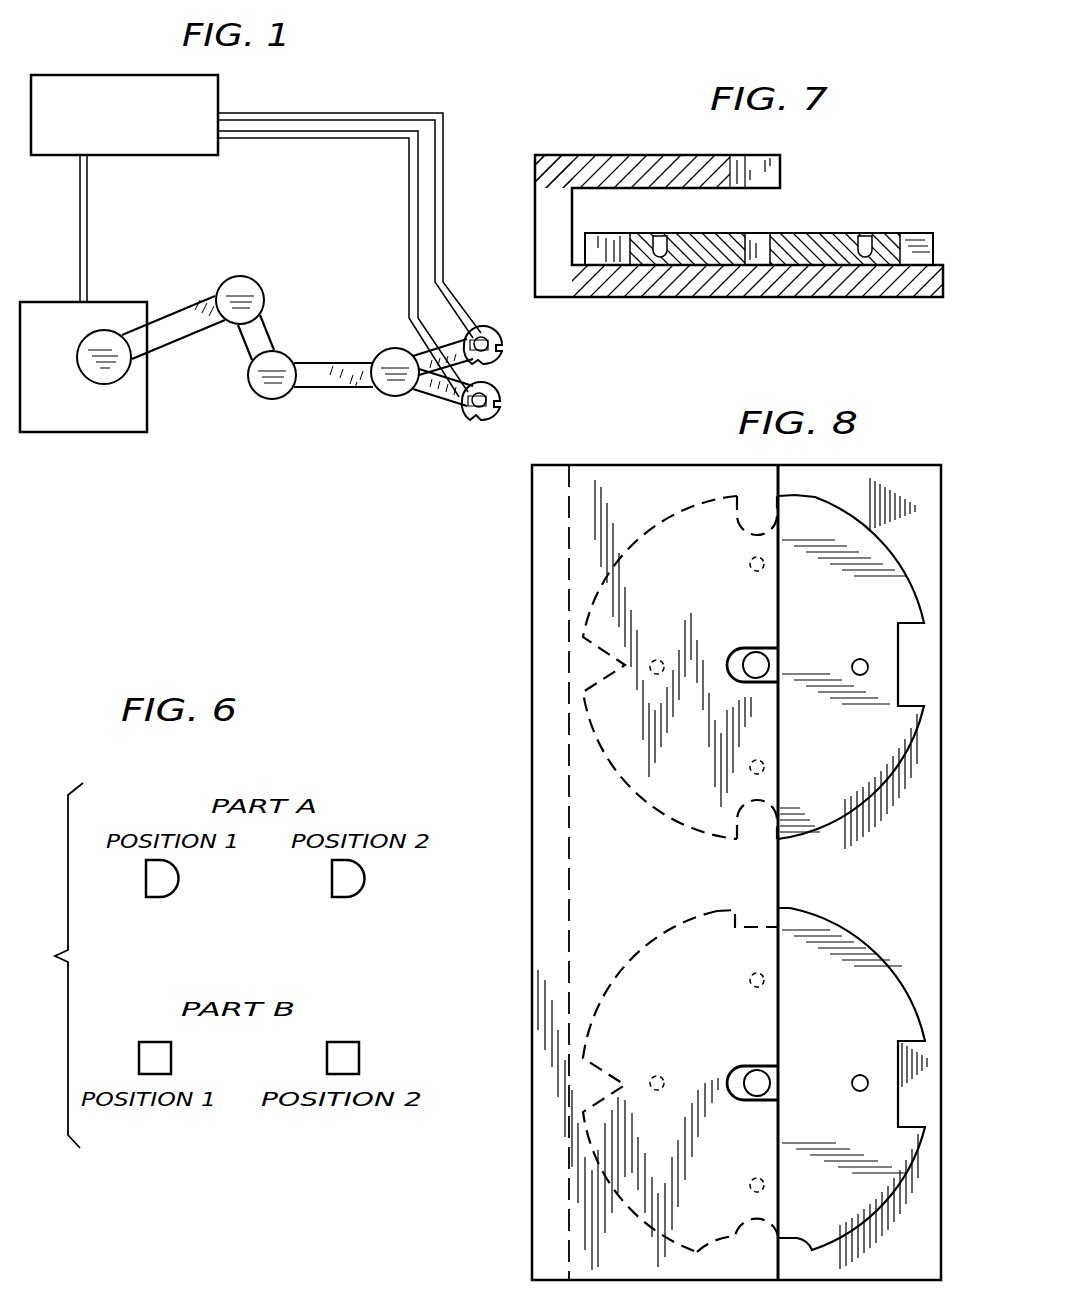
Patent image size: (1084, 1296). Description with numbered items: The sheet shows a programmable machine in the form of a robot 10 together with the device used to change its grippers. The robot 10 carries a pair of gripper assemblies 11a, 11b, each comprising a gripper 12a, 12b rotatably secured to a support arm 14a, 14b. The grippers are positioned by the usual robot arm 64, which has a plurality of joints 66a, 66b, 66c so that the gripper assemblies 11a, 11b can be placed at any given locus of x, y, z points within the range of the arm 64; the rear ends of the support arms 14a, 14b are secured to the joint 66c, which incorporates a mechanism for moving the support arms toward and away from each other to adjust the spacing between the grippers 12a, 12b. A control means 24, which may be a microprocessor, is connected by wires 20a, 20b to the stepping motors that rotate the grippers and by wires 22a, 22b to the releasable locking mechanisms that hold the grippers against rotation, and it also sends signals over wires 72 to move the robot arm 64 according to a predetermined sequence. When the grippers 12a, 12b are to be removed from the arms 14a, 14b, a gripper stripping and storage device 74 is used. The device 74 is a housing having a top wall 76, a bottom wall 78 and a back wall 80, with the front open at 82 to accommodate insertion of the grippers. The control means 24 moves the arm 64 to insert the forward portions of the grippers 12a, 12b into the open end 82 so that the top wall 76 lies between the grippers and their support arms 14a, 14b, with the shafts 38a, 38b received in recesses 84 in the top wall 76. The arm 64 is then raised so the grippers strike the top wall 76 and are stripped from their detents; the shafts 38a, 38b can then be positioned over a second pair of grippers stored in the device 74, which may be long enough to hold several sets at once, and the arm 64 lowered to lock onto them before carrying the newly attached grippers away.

In FIG. 1, the programmable machine 10 is at (196, 452).
In FIG. 1, the control means 24 is at (87, 76).
In FIG. 1, the wires 72 is at (95, 249).
In FIG. 1, the arm 64 is at (200, 281).
In FIG. 1, the joint 66a is at (263, 292).
In FIG. 1, the joint 66b is at (280, 368).
In FIG. 1, the joint 66c is at (388, 386).
In FIG. 1, the support arm 14a is at (446, 405).
In FIG. 1, the support arm 14b is at (466, 330).
In FIG. 1, the gripper assembly 11a is at (472, 443).
In FIG. 1, the gripper assembly 11b is at (405, 341).
In FIG. 1, the gripper 12a is at (500, 395).
In FIG. 8, the gripper 12a is at (832, 515).
In FIG. 1, the gripper 12b is at (503, 352).
In FIG. 8, the gripper 12b is at (844, 942).
In FIG. 1, the wire 20a is at (418, 211).
In FIG. 1, the wire 20b is at (443, 157).
In FIG. 1, the wire 22a is at (409, 243).
In FIG. 1, the wire 22b is at (435, 224).
In FIG. 7, the gripper stripping and storage device 74 is at (737, 207).
In FIG. 7, the top wall 76 is at (606, 128).
In FIG. 8, the top wall 76 is at (736, 872).
In FIG. 7, the bottom wall 78 is at (755, 288).
In FIG. 8, the bottom wall 78 is at (832, 872).
In FIG. 7, the back wall 80 is at (538, 283).
In FIG. 7, the open end 82 is at (778, 209).
In FIG. 8, the recesses 84 is at (728, 670).
In FIG. 8, the shaft 38a is at (757, 655).
In FIG. 8, the shaft 38b is at (758, 1072).